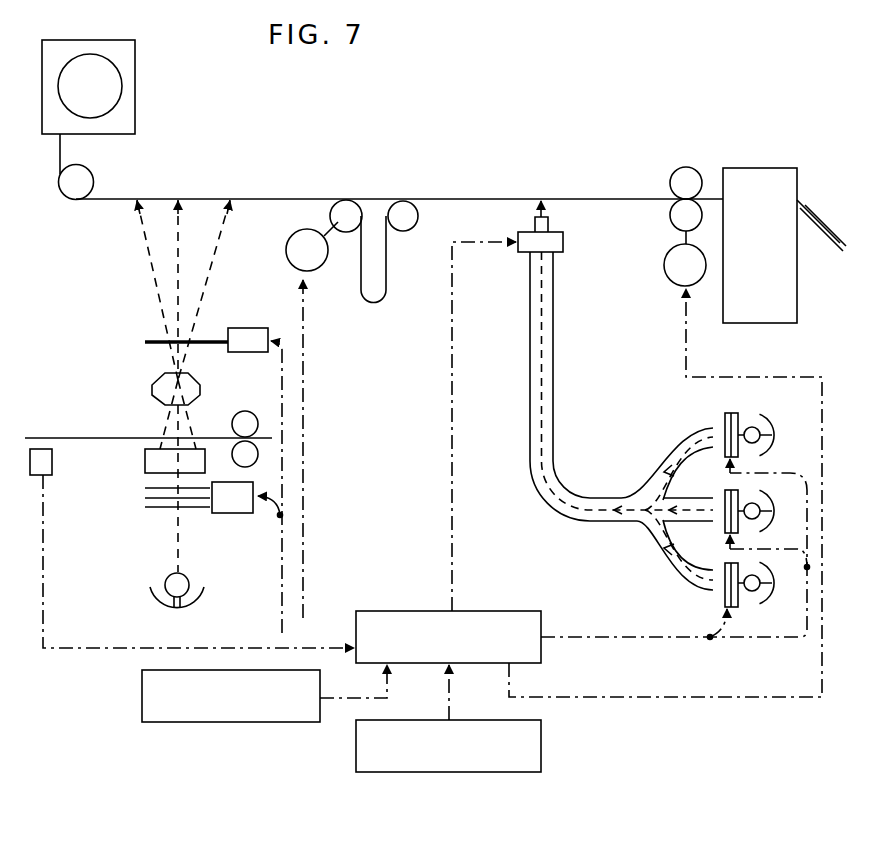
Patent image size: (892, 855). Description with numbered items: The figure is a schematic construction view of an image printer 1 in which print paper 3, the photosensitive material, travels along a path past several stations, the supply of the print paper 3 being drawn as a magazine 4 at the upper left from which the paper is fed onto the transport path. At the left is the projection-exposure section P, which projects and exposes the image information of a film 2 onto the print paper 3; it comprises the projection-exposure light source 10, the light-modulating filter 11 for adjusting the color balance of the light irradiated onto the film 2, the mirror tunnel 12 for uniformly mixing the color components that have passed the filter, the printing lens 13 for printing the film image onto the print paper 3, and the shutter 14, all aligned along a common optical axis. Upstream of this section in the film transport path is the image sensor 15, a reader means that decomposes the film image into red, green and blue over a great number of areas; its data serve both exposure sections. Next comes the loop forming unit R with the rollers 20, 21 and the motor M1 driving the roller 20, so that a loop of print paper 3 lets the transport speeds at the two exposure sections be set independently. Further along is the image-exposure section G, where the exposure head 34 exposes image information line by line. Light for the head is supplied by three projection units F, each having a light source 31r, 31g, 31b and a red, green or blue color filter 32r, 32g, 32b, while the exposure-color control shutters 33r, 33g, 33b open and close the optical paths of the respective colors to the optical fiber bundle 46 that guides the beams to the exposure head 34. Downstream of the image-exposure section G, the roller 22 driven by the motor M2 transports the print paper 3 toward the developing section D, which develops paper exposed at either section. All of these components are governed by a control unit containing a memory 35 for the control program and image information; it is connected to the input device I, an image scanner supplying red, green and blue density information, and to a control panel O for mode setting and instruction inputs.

The image printer 1 is at (487, 107).
The film 2 is at (70, 437).
The print paper 3 is at (97, 200).
The photosensitive material supply magazine 4 is at (135, 87).
The projection-exposure light source 10 is at (148, 600).
The light-modulating filter 11 is at (237, 515).
The mirror tunnel 12 is at (147, 463).
The printing lens 13 is at (155, 378).
The shutter 14 is at (252, 328).
The image sensor 15 is at (52, 462).
The roller 20 is at (347, 200).
The roller 21 is at (401, 210).
The roller 22 is at (680, 166).
The light source 31b is at (758, 412).
The light source 31g is at (770, 488).
The light source 31r is at (768, 604).
The blue color filter 32b is at (737, 413).
The green color filter 32g is at (727, 487).
The red color filter 32r is at (736, 609).
The exposure-color control shutter 33b is at (727, 413).
The exposure-color control shutter 33g is at (725, 532).
The exposure-color control shutter 33r is at (725, 602).
The exposure head 34 is at (569, 239).
The memory 35 is at (527, 611).
The optical fiber bundle 46 is at (553, 335).
The motor M1 is at (299, 232).
The motor M2 is at (663, 273).
The projection-exposure section P is at (228, 187).
The loop forming unit R is at (385, 187).
The image-exposure section G is at (553, 187).
The developing section D is at (753, 167).
The control panel O is at (140, 700).
The input device I is at (541, 752).
The projection unit F is at (790, 615).